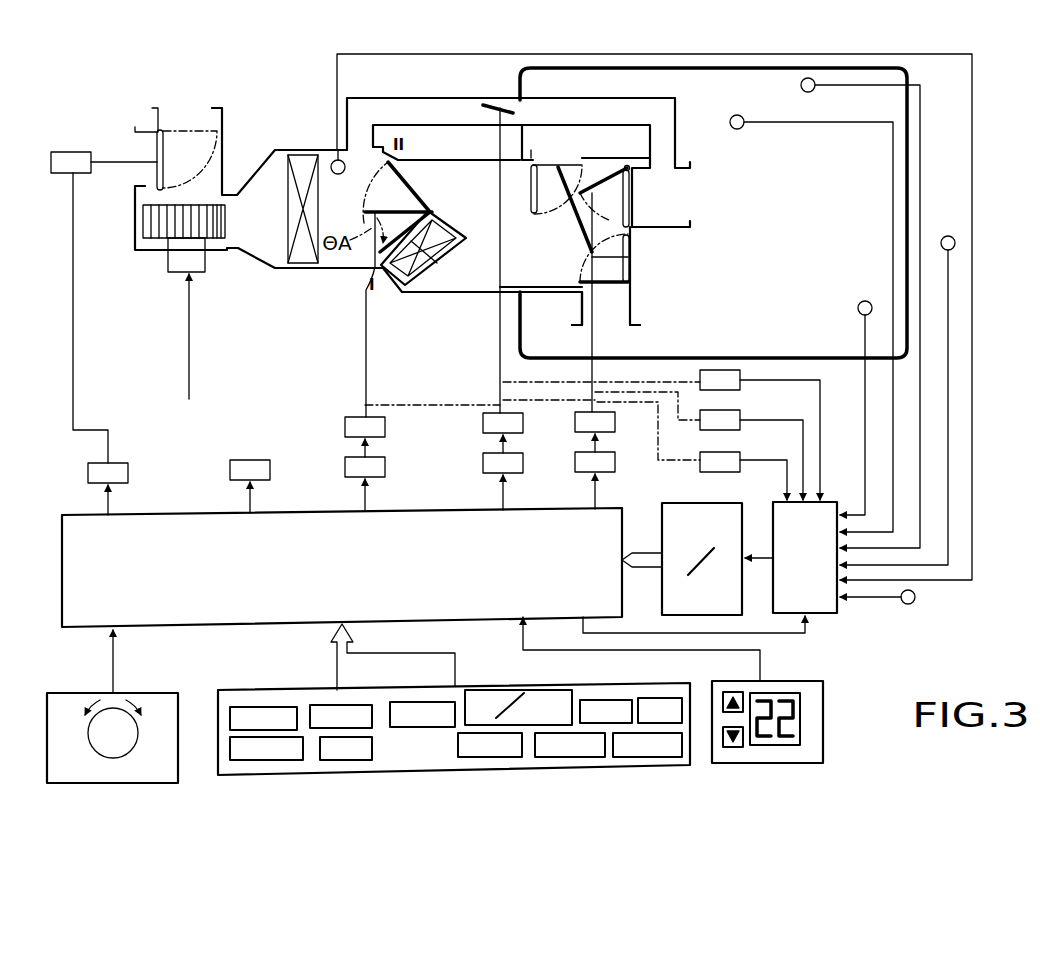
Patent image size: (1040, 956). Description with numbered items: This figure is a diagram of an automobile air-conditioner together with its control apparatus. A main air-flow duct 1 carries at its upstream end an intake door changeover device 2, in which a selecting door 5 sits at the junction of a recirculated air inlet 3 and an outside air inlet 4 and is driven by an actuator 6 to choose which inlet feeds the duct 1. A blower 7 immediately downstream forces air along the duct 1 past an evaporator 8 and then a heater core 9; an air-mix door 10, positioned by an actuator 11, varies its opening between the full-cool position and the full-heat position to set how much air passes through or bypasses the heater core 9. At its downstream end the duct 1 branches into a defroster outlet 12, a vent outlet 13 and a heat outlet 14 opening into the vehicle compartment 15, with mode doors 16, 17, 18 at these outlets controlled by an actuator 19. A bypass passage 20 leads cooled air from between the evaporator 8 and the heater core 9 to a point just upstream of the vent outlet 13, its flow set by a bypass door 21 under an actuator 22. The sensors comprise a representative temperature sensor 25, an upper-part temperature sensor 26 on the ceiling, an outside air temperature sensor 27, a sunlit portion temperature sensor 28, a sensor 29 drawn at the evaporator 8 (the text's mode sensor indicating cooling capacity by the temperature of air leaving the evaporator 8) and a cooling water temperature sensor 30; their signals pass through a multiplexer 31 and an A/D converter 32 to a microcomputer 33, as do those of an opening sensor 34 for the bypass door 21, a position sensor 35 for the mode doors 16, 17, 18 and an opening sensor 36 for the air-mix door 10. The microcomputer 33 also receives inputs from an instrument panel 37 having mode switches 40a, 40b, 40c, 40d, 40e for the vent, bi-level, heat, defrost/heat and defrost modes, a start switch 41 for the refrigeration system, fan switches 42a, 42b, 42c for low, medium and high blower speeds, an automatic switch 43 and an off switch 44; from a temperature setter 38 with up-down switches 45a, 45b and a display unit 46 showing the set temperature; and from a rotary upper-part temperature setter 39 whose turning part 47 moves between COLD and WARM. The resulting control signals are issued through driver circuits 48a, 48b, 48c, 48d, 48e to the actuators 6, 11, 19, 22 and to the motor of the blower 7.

The main air-flow duct 1 is at (263, 160).
The intake door changeover device 2 is at (198, 118).
The recirculated air inlet 3 is at (140, 178).
The outside air inlet 4 is at (175, 118).
The selecting door 5 is at (150, 156).
The actuator 6 is at (70, 152).
The blower 7 is at (150, 228).
The evaporator 8 is at (296, 160).
The heater core 9 is at (398, 273).
The air-mix door 10 is at (418, 205).
The actuator 11 is at (356, 420).
The defroster outlet 12 is at (570, 170).
The vent outlet 13 is at (672, 215).
The heat outlet 14 is at (640, 310).
The vehicle compartment 15 is at (908, 76).
The mode door 16 is at (538, 165).
The mode door 17 is at (632, 185).
The mode door 18 is at (636, 262).
The actuator 19 is at (575, 422).
The bypass passage 20 is at (431, 100).
The bypass door 21 is at (491, 105).
The actuator 22 is at (482, 424).
The representative temperature sensor 25 is at (860, 302).
The upper-part temperature sensor 26 is at (813, 91).
The outside air temperature sensor 27 is at (948, 236).
The sunlit portion temperature sensor 28 is at (737, 115).
The evaporator outlet temperature sensor 29 is at (334, 160).
The cooling water temperature sensor 30 is at (912, 604).
The multiplexer 31 is at (828, 613).
The A/D converter 32 is at (678, 506).
The microcomputer 33 is at (62, 590).
The opening sensor 34 is at (742, 388).
The position sensor 35 is at (742, 428).
The opening sensor 36 is at (742, 470).
The instrument panel 37 is at (678, 765).
The temperature setter 38 is at (825, 735).
The upper-part temperature setter 39 is at (178, 773).
The mode switch 40a is at (264, 706).
The mode switch 40b is at (356, 705).
The mode switch 40c is at (436, 702).
The mode switch 40d is at (526, 690).
The mode switch 40e is at (606, 700).
The start switch 41 is at (660, 698).
The fan switch 42a is at (478, 757).
The fan switch 42b is at (560, 757).
The fan switch 42c is at (630, 757).
The automatic switch 43 is at (262, 760).
The off switch 44 is at (352, 760).
The up-down switch 45a is at (733, 692).
The up-down switch 45b is at (733, 748).
The display unit 46 is at (790, 746).
The temperature setting knob 47 is at (130, 715).
The driver circuit 48a is at (128, 480).
The driver circuit 48b is at (385, 475).
The driver circuit 48c is at (582, 464).
The driver circuit 48d is at (490, 466).
The driver circuit 48e is at (270, 477).